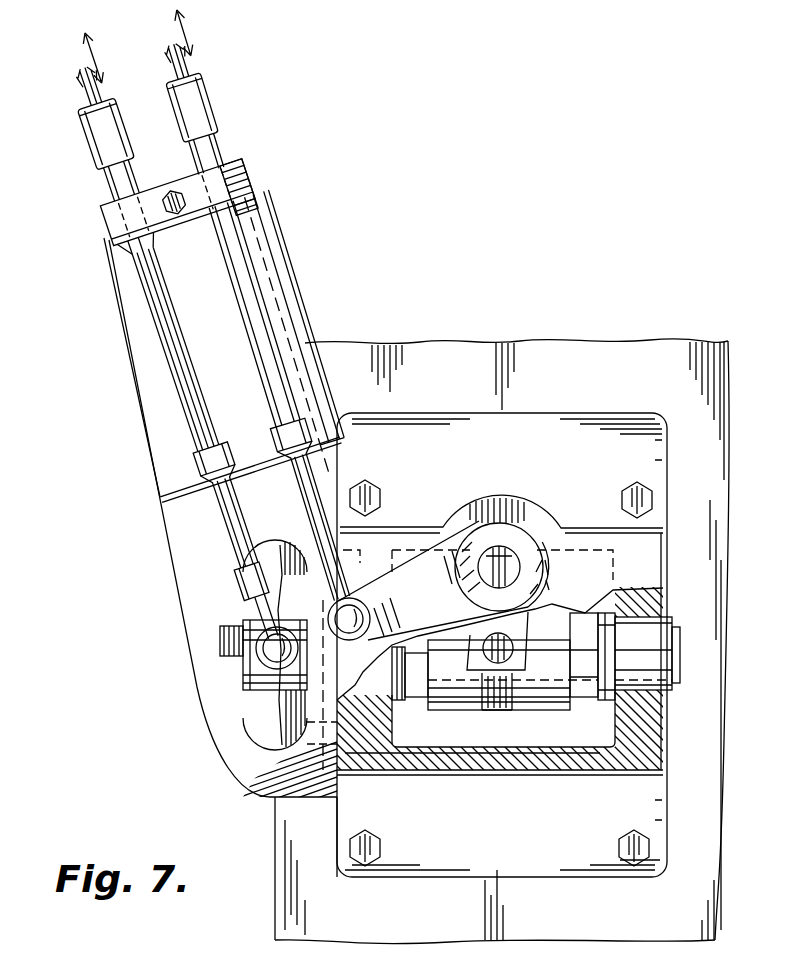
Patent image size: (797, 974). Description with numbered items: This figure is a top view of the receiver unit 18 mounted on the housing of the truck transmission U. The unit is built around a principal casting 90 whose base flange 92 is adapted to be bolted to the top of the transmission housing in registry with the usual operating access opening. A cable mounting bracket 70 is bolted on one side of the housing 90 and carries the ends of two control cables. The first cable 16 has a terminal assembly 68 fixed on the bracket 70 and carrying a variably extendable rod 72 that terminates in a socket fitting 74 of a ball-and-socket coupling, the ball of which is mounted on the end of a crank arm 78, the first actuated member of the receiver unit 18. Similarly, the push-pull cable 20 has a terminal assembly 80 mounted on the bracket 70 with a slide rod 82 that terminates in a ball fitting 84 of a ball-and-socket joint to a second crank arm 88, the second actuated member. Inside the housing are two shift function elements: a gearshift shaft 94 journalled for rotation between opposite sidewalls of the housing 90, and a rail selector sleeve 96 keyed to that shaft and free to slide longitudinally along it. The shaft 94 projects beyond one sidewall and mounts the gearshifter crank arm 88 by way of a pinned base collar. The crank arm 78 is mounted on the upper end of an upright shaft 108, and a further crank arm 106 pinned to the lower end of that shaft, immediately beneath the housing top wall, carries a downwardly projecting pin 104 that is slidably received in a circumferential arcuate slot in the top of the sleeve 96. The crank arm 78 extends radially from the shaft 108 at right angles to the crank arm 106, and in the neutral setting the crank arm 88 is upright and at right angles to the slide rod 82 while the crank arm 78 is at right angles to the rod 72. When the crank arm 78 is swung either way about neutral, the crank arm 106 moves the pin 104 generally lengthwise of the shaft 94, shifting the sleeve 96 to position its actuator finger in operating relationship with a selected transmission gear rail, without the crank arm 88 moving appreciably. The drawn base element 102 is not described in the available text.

The cable 16 is at (207, 113).
The receiver unit 18 is at (201, 770).
The push-pull cable 20 is at (100, 150).
The terminal assembly 68 is at (270, 279).
The mounting bracket 70 is at (260, 212).
The variably extendable rod 72 is at (317, 480).
The socket fitting 74 is at (367, 612).
The crank arm 78 is at (430, 560).
The terminal assembly 80 is at (133, 293).
The slide rod 82 is at (225, 512).
The ball fitting 84 is at (262, 640).
The crank arm 88 is at (247, 682).
The principal casting 90 is at (585, 527).
The base flange 92 is at (538, 428).
The gearshift shaft 94 is at (587, 672).
The rail selector sleeve 96 is at (543, 700).
The base 102 is at (493, 713).
The pin 104 is at (487, 652).
The crank arm 106 is at (530, 630).
The upright shaft 108 is at (500, 553).
The truck transmission U is at (640, 357).